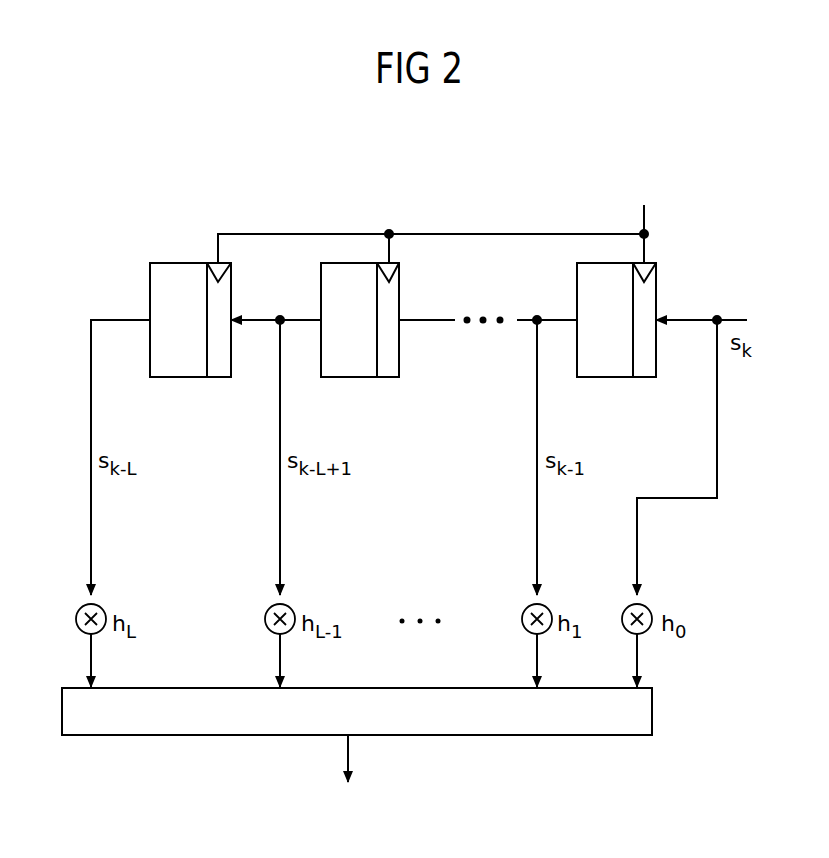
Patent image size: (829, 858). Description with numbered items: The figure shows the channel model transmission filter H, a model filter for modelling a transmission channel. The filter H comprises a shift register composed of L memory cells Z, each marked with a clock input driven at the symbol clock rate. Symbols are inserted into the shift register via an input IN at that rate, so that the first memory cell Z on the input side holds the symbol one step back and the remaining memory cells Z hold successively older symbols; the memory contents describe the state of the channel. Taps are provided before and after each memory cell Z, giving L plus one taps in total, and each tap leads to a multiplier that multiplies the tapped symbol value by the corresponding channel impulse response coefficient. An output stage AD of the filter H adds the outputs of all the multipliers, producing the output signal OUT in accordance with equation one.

The channel model transmission filter H is at (486, 200).
The output stage AD is at (622, 722).
The memory cell Z is at (403, 320).
The input IN is at (702, 303).
The output signal OUT is at (349, 779).